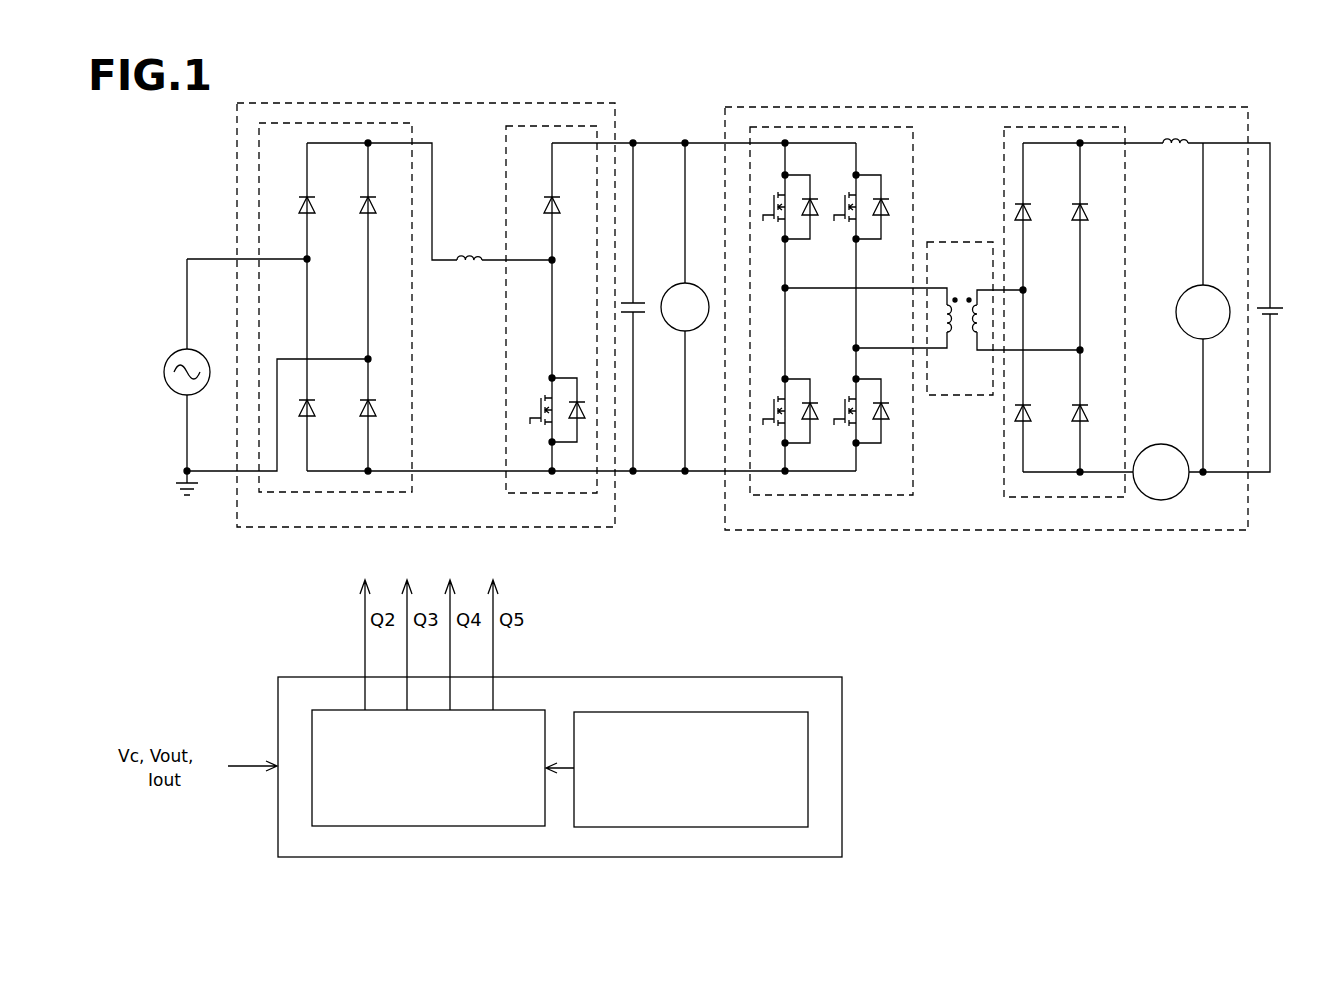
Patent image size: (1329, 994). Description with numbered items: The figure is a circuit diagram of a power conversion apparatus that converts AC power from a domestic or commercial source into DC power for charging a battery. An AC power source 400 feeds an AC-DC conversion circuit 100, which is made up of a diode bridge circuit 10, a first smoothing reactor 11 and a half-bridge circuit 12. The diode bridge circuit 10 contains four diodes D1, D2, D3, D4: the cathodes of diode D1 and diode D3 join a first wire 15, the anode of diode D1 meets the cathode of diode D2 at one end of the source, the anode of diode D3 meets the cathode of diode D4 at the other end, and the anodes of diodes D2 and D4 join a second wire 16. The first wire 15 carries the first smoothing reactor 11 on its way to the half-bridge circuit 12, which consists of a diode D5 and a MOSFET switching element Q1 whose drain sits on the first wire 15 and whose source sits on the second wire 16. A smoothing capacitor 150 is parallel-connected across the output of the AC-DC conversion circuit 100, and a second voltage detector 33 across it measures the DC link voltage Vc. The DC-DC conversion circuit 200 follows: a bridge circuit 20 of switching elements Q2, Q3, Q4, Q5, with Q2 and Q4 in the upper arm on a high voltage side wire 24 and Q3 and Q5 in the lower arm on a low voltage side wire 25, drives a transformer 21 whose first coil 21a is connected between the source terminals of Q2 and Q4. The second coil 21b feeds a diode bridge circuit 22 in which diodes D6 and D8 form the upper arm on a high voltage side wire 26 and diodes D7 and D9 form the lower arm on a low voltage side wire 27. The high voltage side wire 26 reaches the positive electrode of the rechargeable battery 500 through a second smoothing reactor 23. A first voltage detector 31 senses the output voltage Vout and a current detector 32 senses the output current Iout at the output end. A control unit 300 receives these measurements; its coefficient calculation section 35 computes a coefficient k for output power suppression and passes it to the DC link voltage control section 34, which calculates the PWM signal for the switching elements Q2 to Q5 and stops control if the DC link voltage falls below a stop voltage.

The AC-DC conversion circuit 100 is at (281, 103).
The diode bridge circuit 10 is at (335, 279).
The first smoothing reactor 11 is at (470, 258).
The half-bridge circuit 12 is at (539, 279).
The first wire 15 is at (434, 150).
The second wire 16 is at (443, 475).
The smoothing capacitor 150 is at (640, 298).
The second voltage detector 33 is at (694, 284).
The AC power source 400 is at (182, 352).
The DC-DC conversion circuit 200 is at (996, 107).
The bridge circuit 20 is at (836, 316).
The high voltage side wire 24 is at (822, 143).
The low voltage side wire 25 is at (828, 473).
The transformer 21 is at (1003, 331).
The first coil 21a is at (948, 338).
The second coil 21b is at (976, 338).
The diode bridge circuit 22 is at (1068, 317).
The high voltage side wire 26 is at (1043, 143).
The low voltage side wire 27 is at (1048, 474).
The second smoothing reactor 23 is at (1180, 143).
The first voltage detector 31 is at (1196, 286).
The current detector 32 is at (1162, 448).
The rechargeable battery 500 is at (1275, 306).
The control unit 300 is at (830, 677).
The DC link voltage control section 34 is at (336, 710).
The coefficient calculation section 35 is at (598, 712).
The diode D1 is at (321, 206).
The diode D2 is at (321, 409).
The diode D3 is at (382, 206).
The diode D4 is at (382, 409).
The diode D5 is at (538, 206).
The diode D6 is at (1037, 213).
The diode D7 is at (1037, 414).
The diode D8 is at (1094, 213).
The diode D9 is at (1094, 414).
The switching element Q1 is at (557, 422).
The switching element Q2 is at (790, 219).
The switching element Q3 is at (790, 423).
The switching element Q4 is at (861, 219).
The switching element Q5 is at (861, 423).